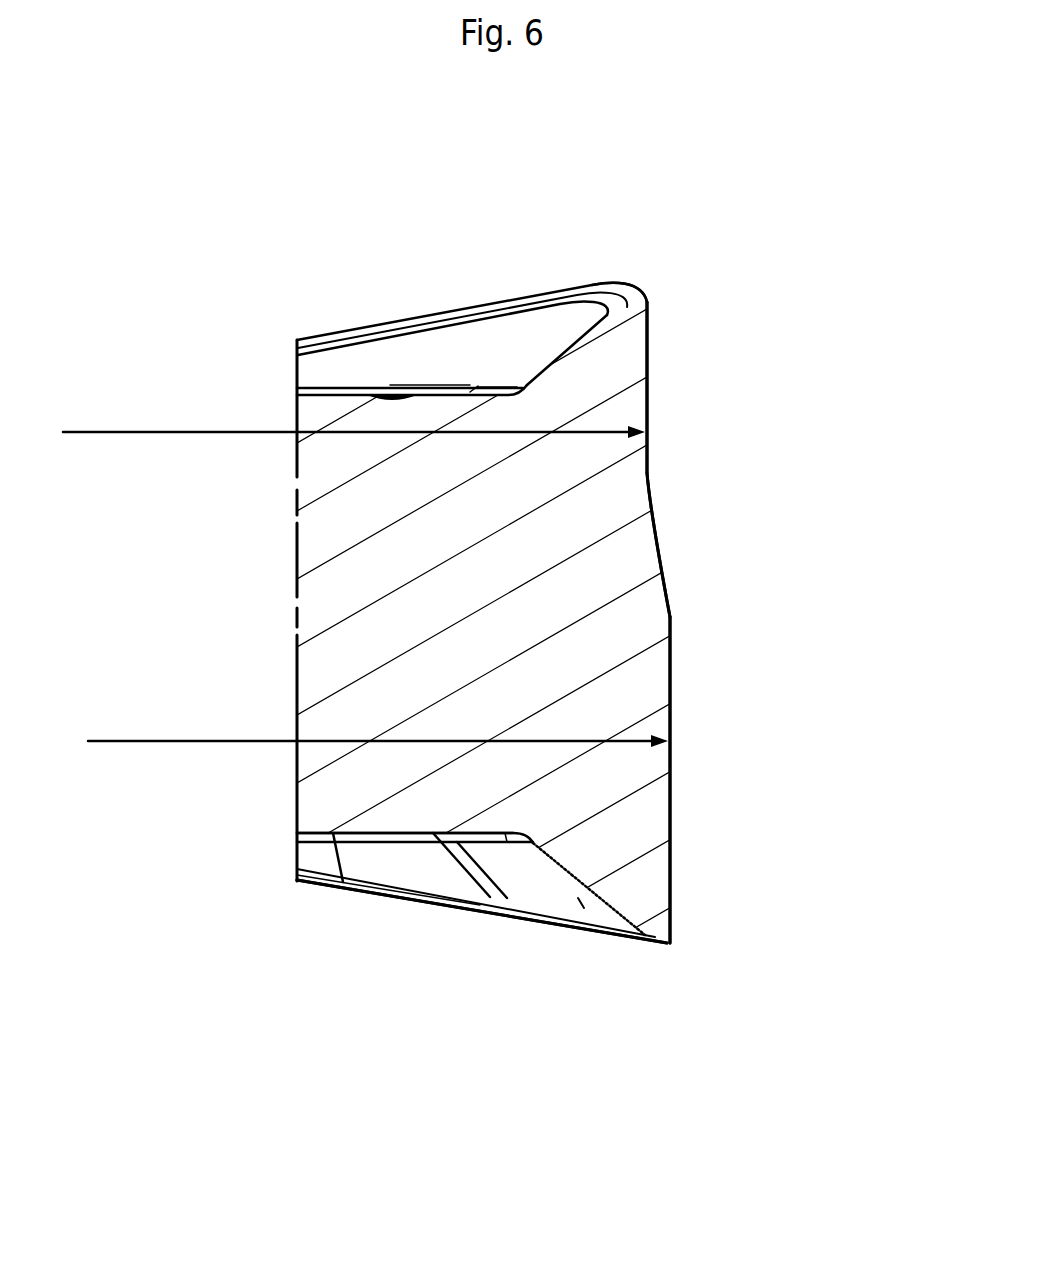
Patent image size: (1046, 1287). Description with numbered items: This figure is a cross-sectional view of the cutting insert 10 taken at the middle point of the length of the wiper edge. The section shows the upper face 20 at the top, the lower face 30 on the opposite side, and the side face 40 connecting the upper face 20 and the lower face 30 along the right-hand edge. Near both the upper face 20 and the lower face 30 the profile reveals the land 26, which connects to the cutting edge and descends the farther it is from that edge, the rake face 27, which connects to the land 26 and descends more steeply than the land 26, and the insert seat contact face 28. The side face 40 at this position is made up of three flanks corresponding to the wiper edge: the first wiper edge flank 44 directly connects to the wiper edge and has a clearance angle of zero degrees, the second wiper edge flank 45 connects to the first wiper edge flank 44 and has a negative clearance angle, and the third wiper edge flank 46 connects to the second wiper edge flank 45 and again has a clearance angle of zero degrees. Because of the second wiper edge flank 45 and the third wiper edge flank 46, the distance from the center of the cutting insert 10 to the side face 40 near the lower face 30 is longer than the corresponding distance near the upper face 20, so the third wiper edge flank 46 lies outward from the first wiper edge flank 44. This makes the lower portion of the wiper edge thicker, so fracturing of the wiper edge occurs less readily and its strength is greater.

The cutting insert 10 is at (544, 1218).
The upper face 20 is at (682, 142).
The land 26 is at (613, 310).
The rake face 27 is at (557, 357).
The insert seat contact face 28 is at (440, 393).
The lower face 30 is at (682, 1060).
The side face 40 is at (882, 358).
The first wiper edge flank 44 is at (647, 387).
The second wiper edge flank 45 is at (662, 562).
The third wiper edge flank 46 is at (670, 825).